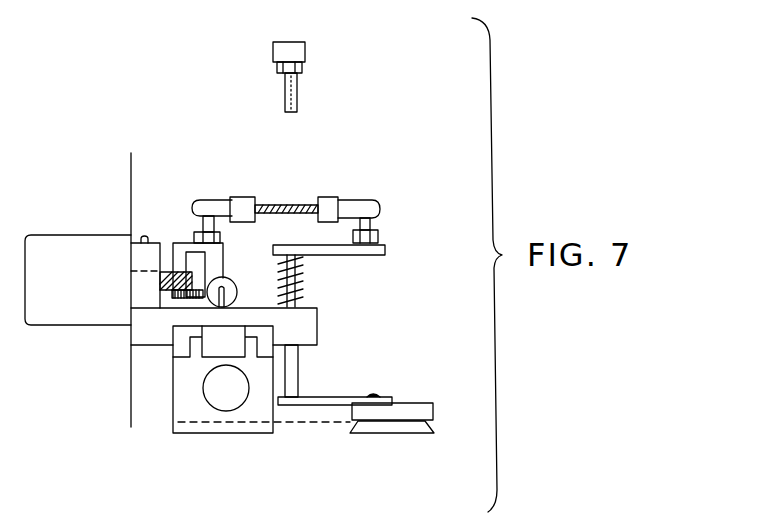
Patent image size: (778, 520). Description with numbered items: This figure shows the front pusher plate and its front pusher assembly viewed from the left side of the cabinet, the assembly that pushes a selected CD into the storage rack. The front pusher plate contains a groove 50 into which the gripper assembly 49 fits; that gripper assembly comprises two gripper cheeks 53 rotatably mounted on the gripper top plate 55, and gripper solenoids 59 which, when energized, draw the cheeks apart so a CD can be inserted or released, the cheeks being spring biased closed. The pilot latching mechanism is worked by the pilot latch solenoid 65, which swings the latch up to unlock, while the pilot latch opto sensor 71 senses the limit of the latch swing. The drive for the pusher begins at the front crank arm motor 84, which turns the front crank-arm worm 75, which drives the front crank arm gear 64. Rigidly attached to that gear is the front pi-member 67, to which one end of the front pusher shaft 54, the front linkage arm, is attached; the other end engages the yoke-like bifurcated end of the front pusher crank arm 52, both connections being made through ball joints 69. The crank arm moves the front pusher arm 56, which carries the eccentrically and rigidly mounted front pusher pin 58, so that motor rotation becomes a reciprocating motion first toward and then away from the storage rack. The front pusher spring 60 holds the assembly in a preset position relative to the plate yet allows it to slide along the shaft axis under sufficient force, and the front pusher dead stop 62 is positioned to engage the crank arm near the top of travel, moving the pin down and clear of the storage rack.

The gripper assembly 49 is at (214, 444).
The groove 50 is at (192, 337).
The front pusher crank arm 52 is at (348, 256).
The gripper cheeks 53 is at (257, 434).
The front pusher shaft 54 is at (306, 192).
The gripper top plate 55 is at (265, 308).
The front pusher arm 56 is at (346, 380).
The front pusher pin 58 is at (410, 433).
The gripper solenoids 59 is at (231, 281).
The front pusher spring 60 is at (303, 270).
The front pusher dead stop 62 is at (298, 92).
The front crank arm gear 64 is at (182, 300).
The pilot latch solenoid 65 is at (152, 242).
The front pi-member 67 is at (222, 252).
The ball joints 69 is at (213, 201).
The pilot latch opto sensor 71 is at (133, 293).
The front crank-arm worm 75 is at (191, 266).
The front crank arm motor 84 is at (72, 272).